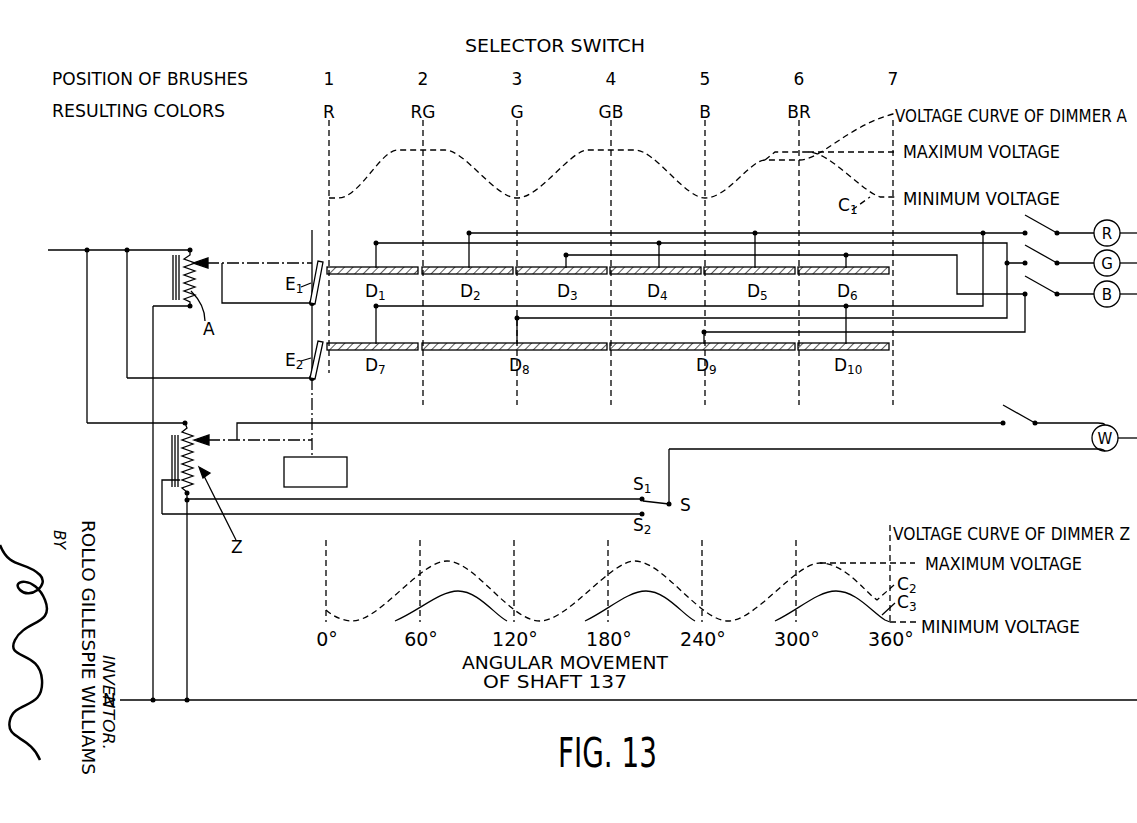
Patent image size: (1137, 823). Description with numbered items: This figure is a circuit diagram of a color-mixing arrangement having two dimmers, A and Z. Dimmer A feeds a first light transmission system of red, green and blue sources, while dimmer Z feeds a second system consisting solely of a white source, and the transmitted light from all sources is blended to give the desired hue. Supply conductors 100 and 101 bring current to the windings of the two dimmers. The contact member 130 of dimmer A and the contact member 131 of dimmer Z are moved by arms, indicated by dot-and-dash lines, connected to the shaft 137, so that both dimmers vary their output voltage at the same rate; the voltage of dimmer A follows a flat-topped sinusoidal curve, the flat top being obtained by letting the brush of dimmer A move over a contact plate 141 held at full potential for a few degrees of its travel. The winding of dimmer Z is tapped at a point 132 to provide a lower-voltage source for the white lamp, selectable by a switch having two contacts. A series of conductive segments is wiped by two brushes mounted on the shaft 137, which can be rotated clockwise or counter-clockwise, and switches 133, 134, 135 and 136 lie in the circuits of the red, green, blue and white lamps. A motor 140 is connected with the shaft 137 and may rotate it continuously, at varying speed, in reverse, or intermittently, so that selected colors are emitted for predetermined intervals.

The supply line 100 is at (60, 250).
The neutral return line 101 is at (129, 699).
The contact member of dimmer A 130 is at (205, 260).
The contact member of dimmer Z 131 is at (199, 436).
The tap point of dimmer Z winding 132 is at (183, 483).
The switch for red lamp 133 is at (1043, 227).
The switch for green lamp 134 is at (1043, 257).
The switch for blue lamp 135 is at (1043, 288).
The switch for white lamp 136 is at (1019, 410).
The shaft 137 is at (313, 410).
The motor 140 is at (348, 470).
The contact plate 141 is at (190, 249).